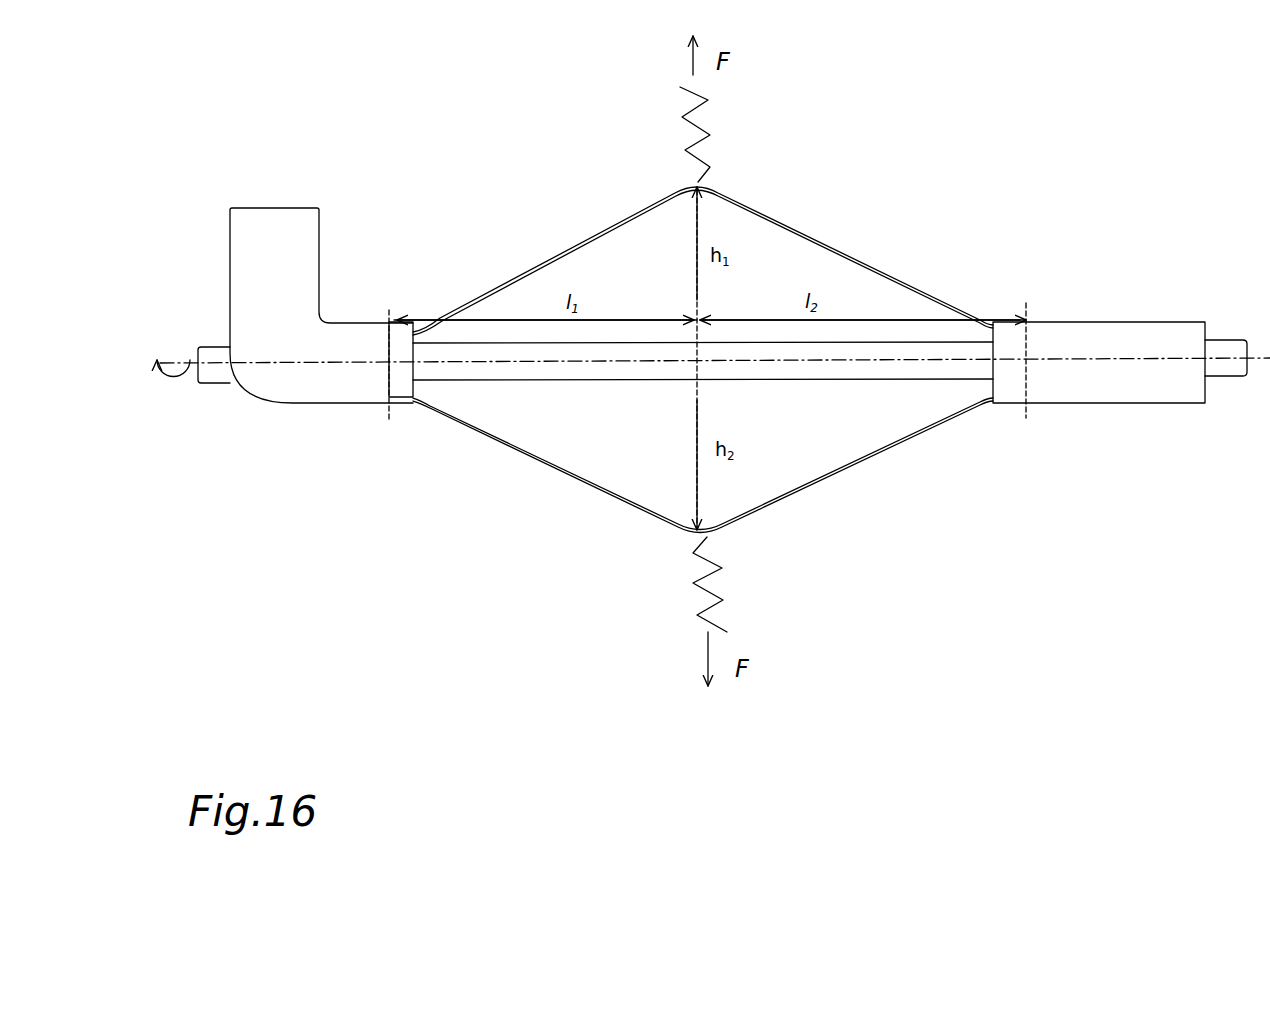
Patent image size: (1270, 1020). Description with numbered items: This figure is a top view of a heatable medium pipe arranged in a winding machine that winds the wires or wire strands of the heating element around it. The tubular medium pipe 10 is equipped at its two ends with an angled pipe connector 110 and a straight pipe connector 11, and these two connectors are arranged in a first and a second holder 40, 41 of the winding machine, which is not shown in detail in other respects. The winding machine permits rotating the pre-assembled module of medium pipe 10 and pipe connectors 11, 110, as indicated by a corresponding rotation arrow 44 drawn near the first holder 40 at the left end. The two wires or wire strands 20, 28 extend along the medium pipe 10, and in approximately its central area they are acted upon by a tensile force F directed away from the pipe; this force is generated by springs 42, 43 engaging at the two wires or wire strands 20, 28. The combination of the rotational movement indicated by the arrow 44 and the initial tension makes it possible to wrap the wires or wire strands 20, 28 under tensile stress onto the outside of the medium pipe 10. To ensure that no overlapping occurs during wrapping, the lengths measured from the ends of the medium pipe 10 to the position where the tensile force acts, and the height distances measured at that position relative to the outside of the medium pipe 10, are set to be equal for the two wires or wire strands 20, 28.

The medium pipe 10 is at (447, 383).
The straight pipe connector 11 is at (1108, 400).
The wire or wire strand 20 is at (512, 277).
The wire or wire strand 28 is at (523, 452).
The first holder 40 is at (225, 383).
The second holder 41 is at (1233, 372).
The spring 42 is at (687, 153).
The spring 43 is at (697, 617).
The rotation arrow 44 is at (157, 358).
The angled pipe connector 110 is at (300, 397).